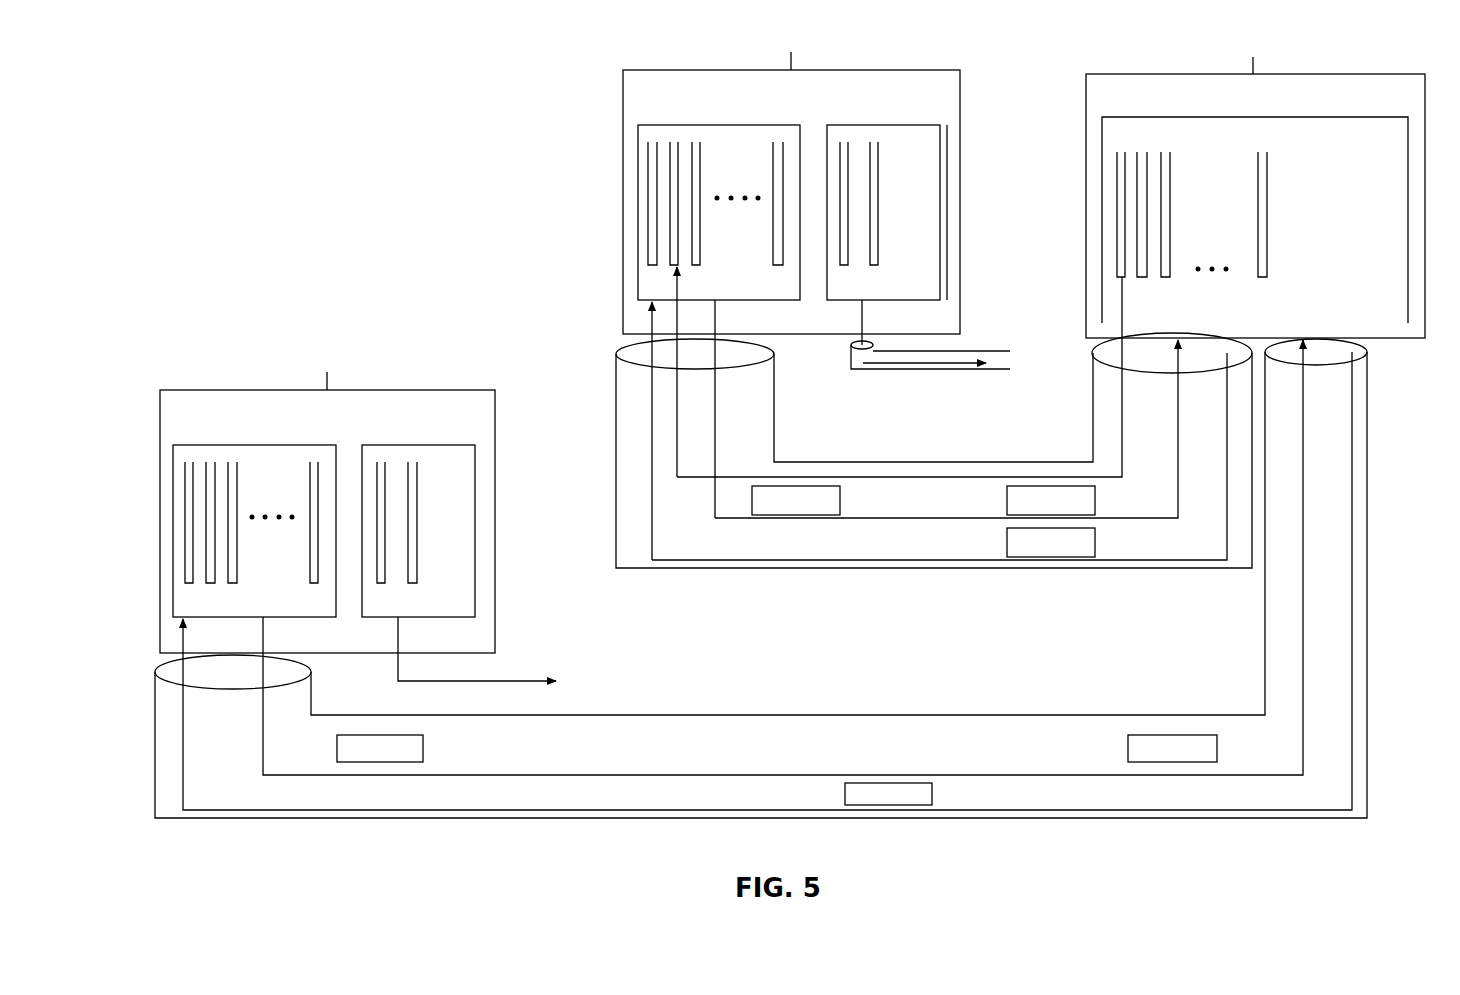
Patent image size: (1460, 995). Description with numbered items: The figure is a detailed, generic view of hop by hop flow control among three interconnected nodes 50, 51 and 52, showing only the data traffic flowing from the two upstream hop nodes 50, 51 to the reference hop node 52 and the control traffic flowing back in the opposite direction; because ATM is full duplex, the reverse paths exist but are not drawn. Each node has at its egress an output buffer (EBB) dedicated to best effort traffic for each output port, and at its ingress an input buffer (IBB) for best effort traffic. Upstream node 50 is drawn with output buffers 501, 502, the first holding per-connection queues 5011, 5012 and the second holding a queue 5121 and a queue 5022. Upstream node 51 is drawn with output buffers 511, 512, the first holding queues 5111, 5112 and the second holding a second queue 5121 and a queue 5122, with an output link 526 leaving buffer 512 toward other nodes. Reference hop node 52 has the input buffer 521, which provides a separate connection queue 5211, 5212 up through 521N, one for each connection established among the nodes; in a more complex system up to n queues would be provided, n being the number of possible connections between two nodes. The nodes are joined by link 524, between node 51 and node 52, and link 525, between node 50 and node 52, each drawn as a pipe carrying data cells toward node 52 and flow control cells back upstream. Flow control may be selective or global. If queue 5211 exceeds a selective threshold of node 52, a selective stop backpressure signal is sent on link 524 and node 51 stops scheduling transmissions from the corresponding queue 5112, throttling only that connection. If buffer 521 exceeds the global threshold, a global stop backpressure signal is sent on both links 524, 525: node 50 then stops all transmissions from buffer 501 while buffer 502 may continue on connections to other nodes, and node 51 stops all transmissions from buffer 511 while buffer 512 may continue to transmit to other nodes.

The node 50 is at (395, 390).
The node 51 is at (847, 70).
The node 52 is at (1310, 74).
The output buffer 501 is at (290, 617).
The output buffer 502 is at (415, 617).
The output buffer 511 is at (740, 300).
The output buffer 512 is at (870, 300).
The input buffer 521 is at (1155, 117).
The link 524 is at (1046, 570).
The link 525 is at (1367, 482).
The link 526 is at (880, 370).
The queue 5011 is at (190, 460).
The queue 5012 is at (210, 460).
The queue 5121 is at (381, 460).
The queue 5022 is at (414, 460).
The queue 5111 is at (652, 141).
The queue 5112 is at (668, 141).
The queue 5122 is at (875, 144).
The queue 5211 is at (1121, 160).
The queue 5212 is at (1143, 160).
The queue 521N is at (1260, 160).